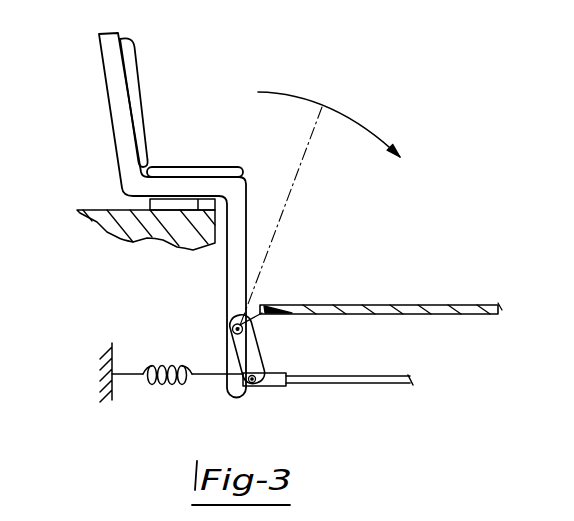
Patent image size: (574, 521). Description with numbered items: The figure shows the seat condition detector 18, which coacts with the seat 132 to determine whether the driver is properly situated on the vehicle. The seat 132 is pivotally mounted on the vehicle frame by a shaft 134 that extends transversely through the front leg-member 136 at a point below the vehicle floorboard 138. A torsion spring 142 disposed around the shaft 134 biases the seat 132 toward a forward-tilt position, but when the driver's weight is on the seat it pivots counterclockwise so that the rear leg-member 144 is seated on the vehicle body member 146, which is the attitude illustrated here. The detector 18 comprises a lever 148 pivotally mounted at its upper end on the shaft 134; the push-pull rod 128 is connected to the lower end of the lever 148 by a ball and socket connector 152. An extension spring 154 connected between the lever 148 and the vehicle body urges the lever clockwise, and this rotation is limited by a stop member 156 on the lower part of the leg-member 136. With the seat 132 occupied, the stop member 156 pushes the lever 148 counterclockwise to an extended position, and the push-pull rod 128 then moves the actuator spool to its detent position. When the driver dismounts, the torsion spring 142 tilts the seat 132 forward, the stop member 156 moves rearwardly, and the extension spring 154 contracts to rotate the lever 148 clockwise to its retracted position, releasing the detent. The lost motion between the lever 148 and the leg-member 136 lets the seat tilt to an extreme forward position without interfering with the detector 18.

The seat condition detector 18 is at (272, 350).
The push-pull rod 128 is at (365, 375).
The seat 132 is at (210, 157).
The shaft 134 is at (243, 325).
The front leg-member 136 is at (247, 257).
The vehicle floorboard 138 is at (452, 262).
The torsion spring 142 is at (211, 318).
The rear leg-member 144 is at (148, 207).
The vehicle body member 146 is at (107, 232).
The lever 148 is at (268, 364).
The ball and socket connector 152 is at (272, 388).
The extension spring 154 is at (153, 385).
The stop member 156 is at (232, 373).